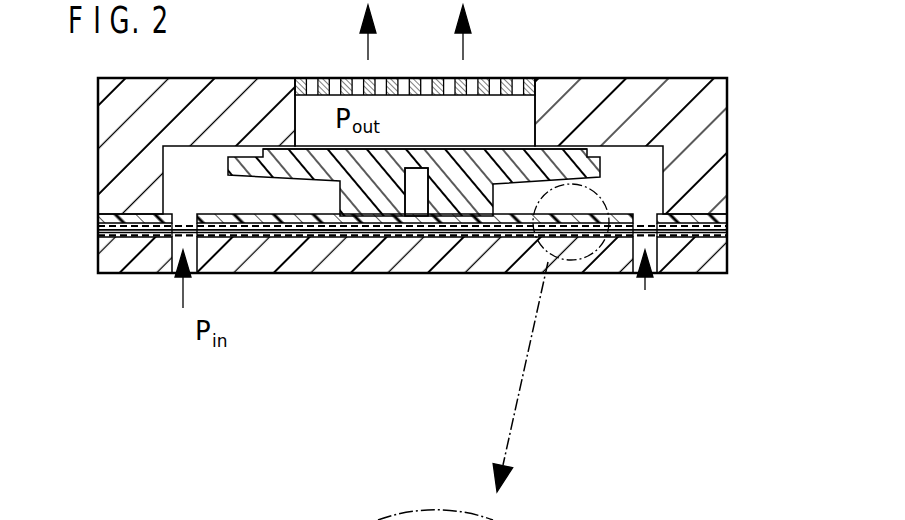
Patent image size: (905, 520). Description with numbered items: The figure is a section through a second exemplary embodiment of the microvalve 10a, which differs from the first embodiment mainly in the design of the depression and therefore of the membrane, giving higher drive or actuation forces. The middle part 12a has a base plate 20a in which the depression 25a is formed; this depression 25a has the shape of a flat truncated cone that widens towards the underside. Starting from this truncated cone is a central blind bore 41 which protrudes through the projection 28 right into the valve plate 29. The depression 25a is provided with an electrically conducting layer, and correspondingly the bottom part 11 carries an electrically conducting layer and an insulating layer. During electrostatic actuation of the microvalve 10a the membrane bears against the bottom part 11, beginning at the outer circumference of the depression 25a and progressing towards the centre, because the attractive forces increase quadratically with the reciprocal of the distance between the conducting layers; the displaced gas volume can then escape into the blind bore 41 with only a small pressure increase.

The microvalve 10a is at (735, 138).
The bottom part 11 is at (715, 256).
The middle part 12a is at (98, 222).
The base plate 20a is at (712, 222).
The depression 25a is at (317, 232).
The projection 28 is at (478, 170).
The valve plate 29 is at (557, 148).
The blind bore 41 is at (408, 198).